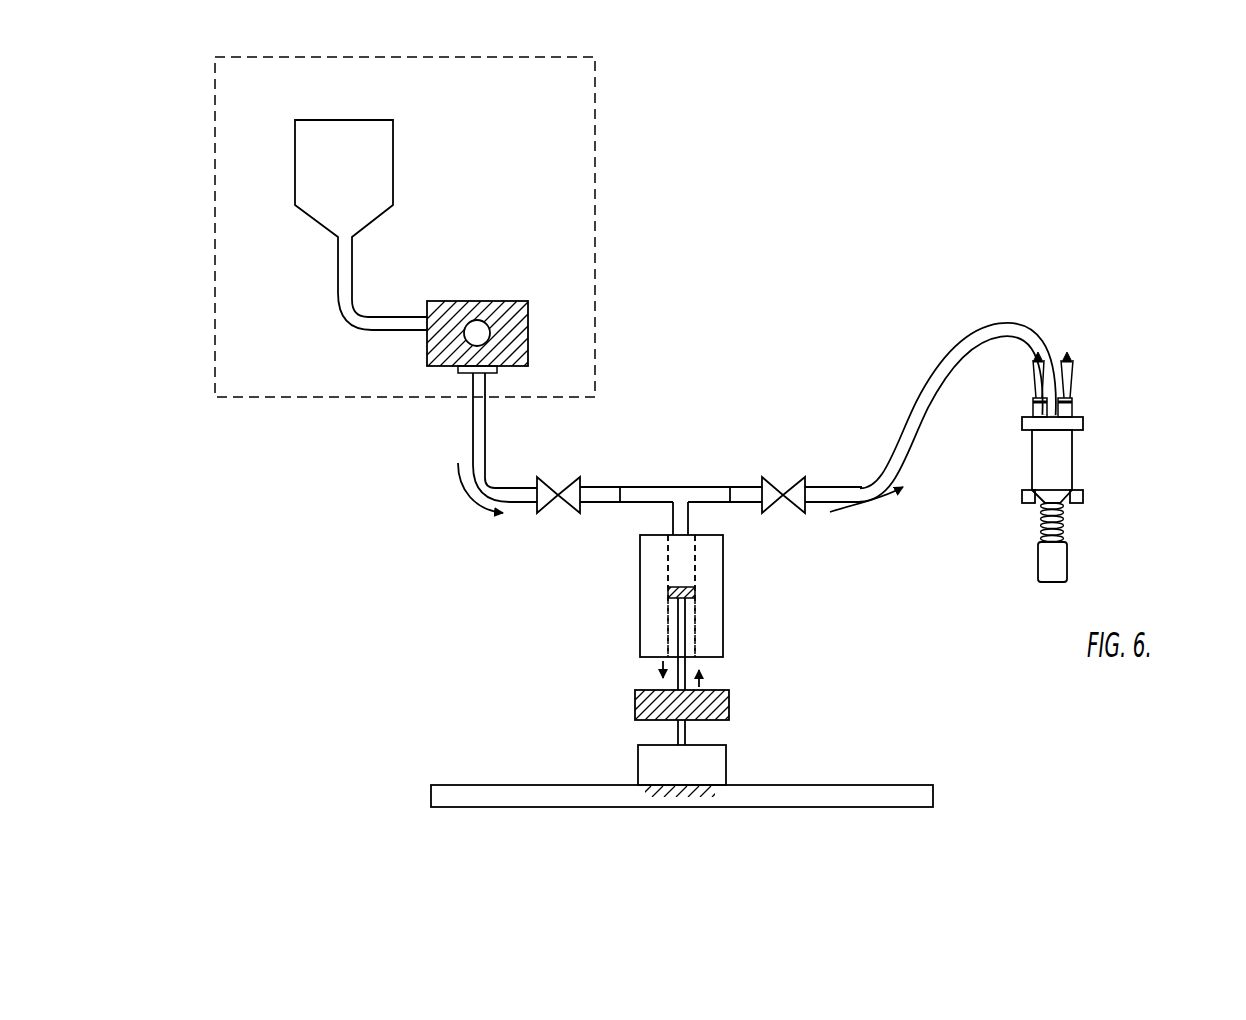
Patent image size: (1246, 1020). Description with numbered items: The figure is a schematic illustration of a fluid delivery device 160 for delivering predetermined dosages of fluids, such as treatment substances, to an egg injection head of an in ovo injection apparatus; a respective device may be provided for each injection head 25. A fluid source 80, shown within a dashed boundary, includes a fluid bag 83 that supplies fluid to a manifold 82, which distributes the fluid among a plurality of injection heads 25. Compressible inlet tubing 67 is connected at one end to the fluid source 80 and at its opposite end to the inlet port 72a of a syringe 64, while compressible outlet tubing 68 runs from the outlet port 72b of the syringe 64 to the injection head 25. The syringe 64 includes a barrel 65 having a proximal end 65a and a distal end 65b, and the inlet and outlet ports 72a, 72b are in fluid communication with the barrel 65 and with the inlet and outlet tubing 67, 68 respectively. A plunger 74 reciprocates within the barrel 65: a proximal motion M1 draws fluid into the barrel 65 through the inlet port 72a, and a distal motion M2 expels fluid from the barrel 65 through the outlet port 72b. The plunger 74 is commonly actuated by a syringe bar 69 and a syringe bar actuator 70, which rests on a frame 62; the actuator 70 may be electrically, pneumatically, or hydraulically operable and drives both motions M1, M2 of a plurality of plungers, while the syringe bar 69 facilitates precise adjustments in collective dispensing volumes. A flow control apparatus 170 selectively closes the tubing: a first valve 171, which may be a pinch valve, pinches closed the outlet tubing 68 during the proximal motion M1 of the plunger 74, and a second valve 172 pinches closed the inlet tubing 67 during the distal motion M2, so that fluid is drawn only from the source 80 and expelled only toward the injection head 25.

The fluid source 80 is at (595, 80).
The fluid bag 83 is at (377, 175).
The manifold 82 is at (481, 300).
The compressible inlet tubing 67 is at (484, 440).
The second valve 172 is at (578, 478).
The inlet port 72a is at (629, 487).
The outlet port 72b is at (728, 491).
The first valve 171 is at (762, 478).
The flow control apparatus 170 is at (782, 415).
The fluid delivery device 160 is at (808, 243).
The compressible outlet tubing 68 is at (923, 442).
The injection head 25 is at (1073, 470).
The syringe 64 is at (723, 588).
The barrel 65 is at (672, 570).
The proximal end 65a is at (667, 638).
The distal end 65b is at (697, 545).
The plunger 74 is at (688, 620).
The syringe bar 69 is at (728, 704).
The syringe bar actuator 70 is at (718, 765).
The frame 62 is at (898, 785).
The proximal motion M1 is at (660, 670).
The distal motion M2 is at (702, 680).